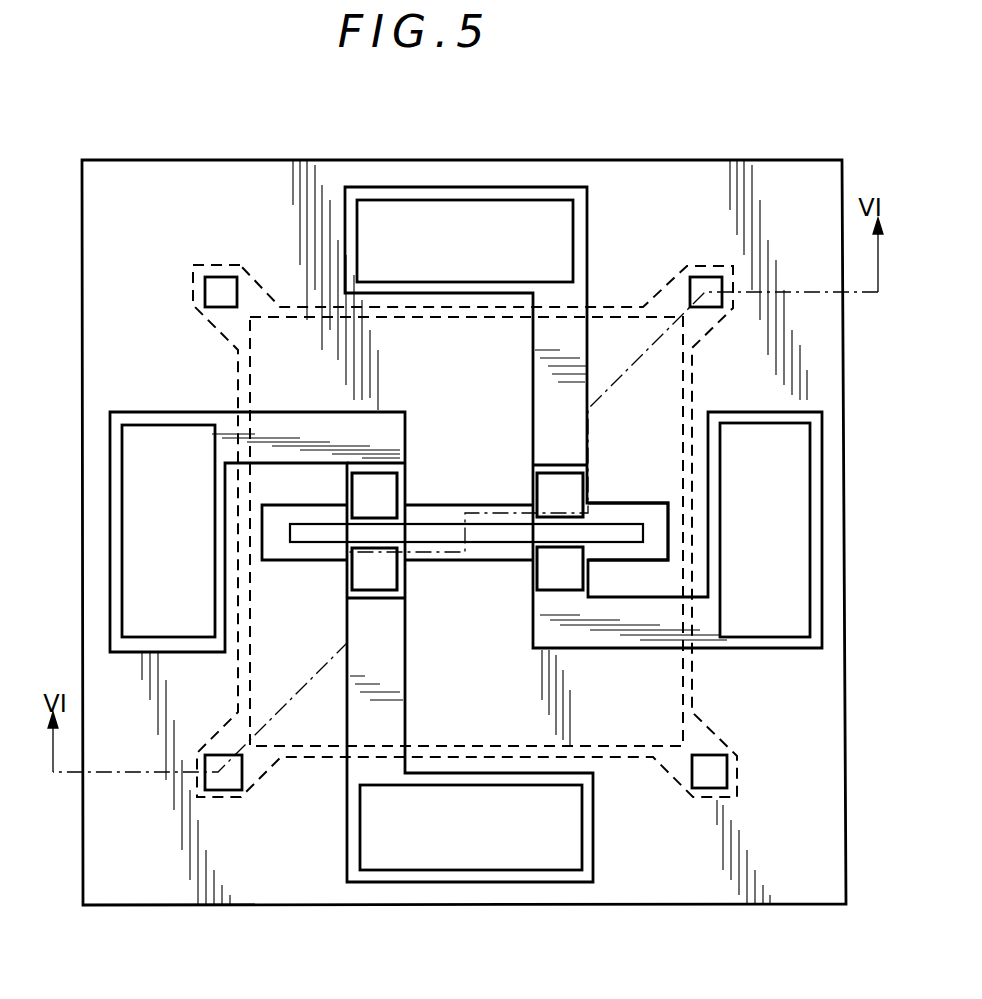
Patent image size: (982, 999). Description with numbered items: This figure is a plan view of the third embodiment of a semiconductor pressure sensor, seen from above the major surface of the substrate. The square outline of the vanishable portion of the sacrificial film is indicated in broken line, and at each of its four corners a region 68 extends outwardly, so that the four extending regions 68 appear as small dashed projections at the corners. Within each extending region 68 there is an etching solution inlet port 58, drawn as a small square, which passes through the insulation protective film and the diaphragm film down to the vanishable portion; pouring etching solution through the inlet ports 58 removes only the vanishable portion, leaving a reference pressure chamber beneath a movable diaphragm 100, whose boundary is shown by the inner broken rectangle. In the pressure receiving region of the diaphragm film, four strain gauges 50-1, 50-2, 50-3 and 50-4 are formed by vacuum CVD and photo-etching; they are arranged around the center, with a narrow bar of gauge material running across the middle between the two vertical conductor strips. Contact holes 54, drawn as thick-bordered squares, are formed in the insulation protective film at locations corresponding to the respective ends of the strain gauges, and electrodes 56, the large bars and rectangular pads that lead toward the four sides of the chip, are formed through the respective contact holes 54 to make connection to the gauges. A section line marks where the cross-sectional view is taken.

The strain gauge 50-1 is at (625, 503).
The strain gauge 50-2 is at (500, 552).
The strain gauge 50-3 is at (278, 542).
The strain gauge 50-4 is at (433, 505).
The contact hole 54 is at (382, 490).
The electrode 56 is at (328, 420).
The etching solution inlet port 58 is at (222, 288).
The extending region 68 is at (225, 330).
The movable diaphragm 100 is at (662, 703).